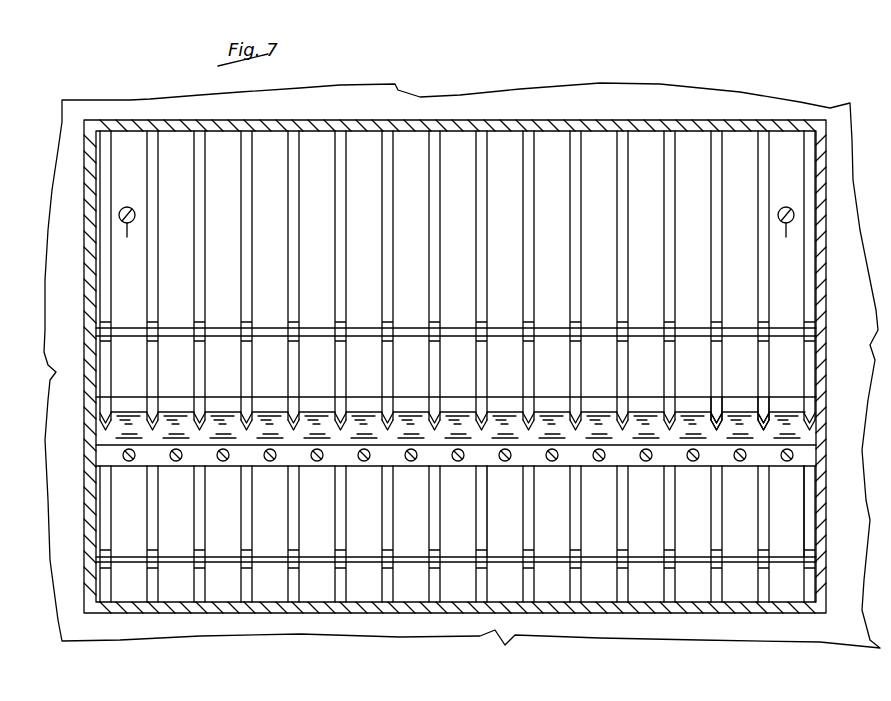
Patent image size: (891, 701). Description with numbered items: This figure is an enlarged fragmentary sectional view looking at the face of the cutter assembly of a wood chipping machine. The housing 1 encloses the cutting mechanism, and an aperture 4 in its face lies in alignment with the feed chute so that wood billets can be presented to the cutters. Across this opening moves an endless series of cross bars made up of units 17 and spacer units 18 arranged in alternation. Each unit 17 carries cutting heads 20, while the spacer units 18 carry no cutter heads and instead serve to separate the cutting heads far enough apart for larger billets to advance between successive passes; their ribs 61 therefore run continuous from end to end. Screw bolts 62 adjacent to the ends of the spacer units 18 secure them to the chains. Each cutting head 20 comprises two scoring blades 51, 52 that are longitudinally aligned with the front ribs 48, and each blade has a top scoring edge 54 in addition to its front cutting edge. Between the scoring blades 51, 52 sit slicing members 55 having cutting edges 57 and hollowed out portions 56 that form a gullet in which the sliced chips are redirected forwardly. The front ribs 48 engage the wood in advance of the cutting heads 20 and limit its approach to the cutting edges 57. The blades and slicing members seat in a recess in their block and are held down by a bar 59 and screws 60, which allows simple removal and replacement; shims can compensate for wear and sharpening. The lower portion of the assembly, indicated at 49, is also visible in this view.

The housing 1 is at (472, 366).
The aperture 4 is at (826, 260).
The unit 17 is at (812, 499).
The spacer unit 18 is at (810, 209).
The cutting head 20 is at (506, 391).
The front rib 48 is at (527, 523).
The lower panel section 49 is at (468, 514).
The scoring blade 51 is at (718, 436).
The scoring blade 52 is at (763, 437).
The top scoring edge 54 is at (717, 405).
The slicing member 55 is at (688, 405).
The hollowed out portion 56 is at (644, 428).
The cutting edge 57 is at (597, 415).
The bar 59 is at (401, 466).
The screw 60 is at (465, 456).
The rib 61 is at (526, 287).
The screw bolt 62 is at (456, 232).